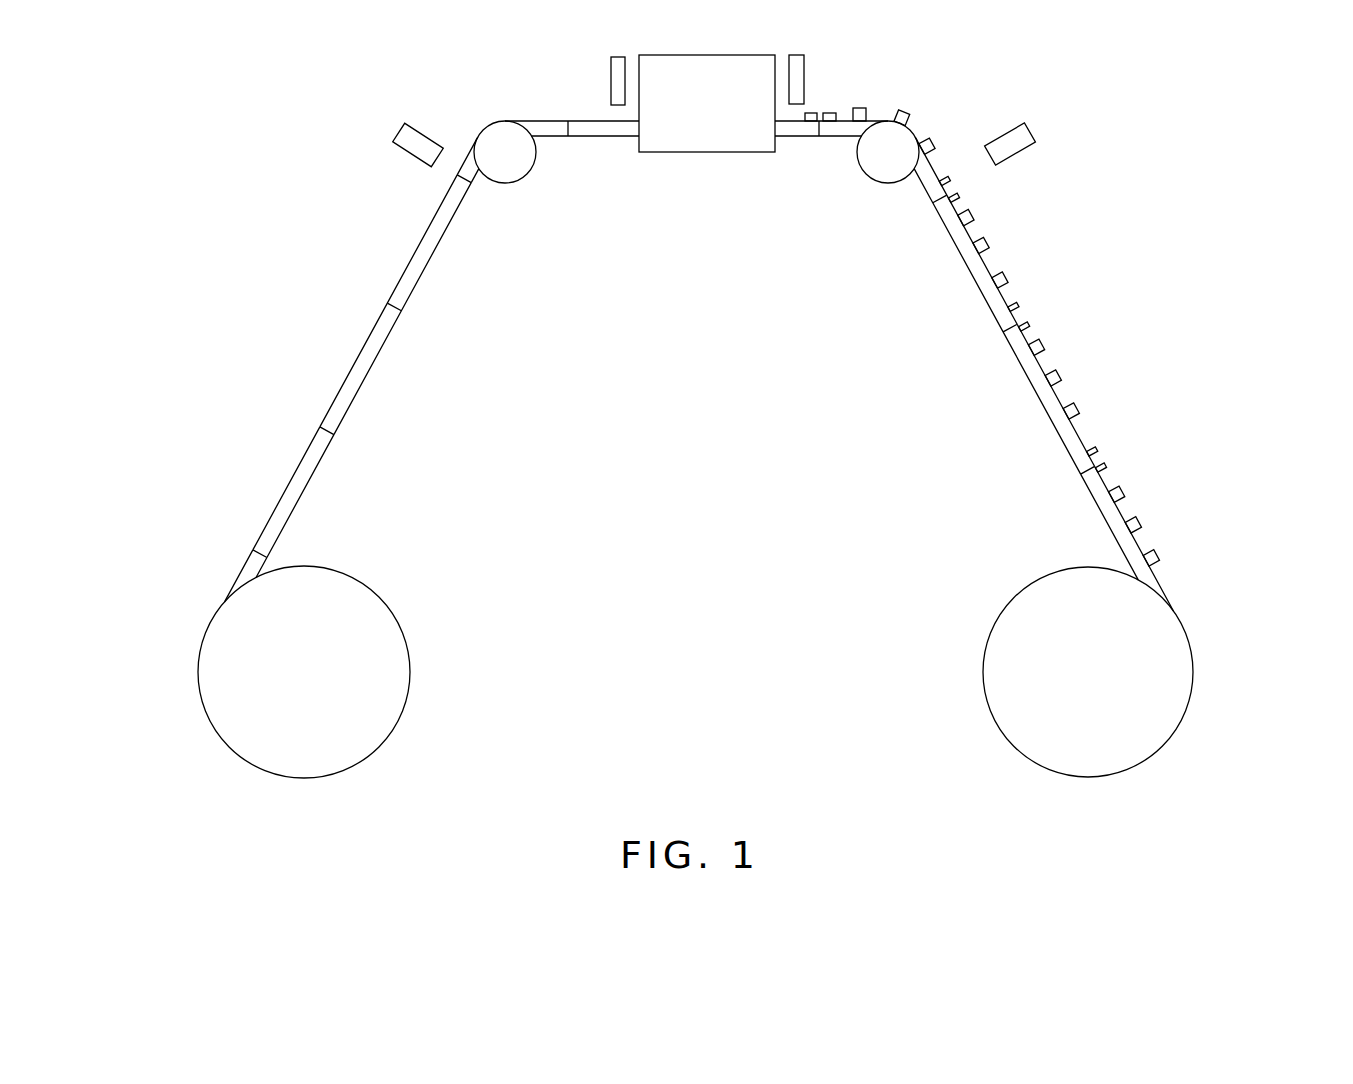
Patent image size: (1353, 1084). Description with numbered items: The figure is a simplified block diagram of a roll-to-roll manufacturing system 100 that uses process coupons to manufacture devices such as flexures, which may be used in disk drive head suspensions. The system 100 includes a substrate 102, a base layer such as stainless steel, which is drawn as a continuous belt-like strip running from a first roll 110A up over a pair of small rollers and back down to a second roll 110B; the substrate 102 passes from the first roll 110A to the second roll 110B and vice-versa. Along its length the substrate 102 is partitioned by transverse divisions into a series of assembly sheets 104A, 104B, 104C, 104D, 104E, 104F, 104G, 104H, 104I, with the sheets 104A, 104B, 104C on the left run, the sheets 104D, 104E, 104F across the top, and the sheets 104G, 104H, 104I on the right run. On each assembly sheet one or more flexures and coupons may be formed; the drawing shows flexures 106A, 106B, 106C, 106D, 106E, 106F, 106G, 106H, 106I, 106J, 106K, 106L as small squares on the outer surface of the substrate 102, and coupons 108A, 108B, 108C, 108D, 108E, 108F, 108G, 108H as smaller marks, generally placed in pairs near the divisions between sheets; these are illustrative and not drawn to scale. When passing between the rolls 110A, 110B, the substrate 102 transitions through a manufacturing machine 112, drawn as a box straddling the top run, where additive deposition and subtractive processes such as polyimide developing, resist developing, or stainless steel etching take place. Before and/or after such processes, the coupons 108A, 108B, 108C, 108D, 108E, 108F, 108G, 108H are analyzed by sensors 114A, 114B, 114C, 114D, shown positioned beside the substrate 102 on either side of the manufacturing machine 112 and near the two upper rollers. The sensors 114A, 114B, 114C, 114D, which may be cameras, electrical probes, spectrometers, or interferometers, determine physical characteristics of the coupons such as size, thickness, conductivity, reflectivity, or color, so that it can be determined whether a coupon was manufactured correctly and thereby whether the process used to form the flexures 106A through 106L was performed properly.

The system 100 is at (212, 110).
The substrate 102 is at (236, 444).
The assembly sheet 104A is at (300, 486).
The assembly sheet 104B is at (365, 358).
The assembly sheet 104C is at (435, 238).
The assembly sheet 104D is at (550, 128).
The assembly sheet 104E is at (607, 128).
The assembly sheet 104F is at (837, 130).
The assembly sheet 104G is at (970, 260).
The assembly sheet 104H is at (1043, 395).
The assembly sheet 104I is at (1113, 525).
The flexure 106A is at (860, 108).
The flexure 106B is at (910, 112).
The flexure 106C is at (932, 140).
The flexure 106D is at (972, 212).
The flexure 106E is at (990, 240).
The flexure 106F is at (1007, 276).
The flexure 106G is at (1044, 346).
The flexure 106H is at (1062, 378).
The flexure 106I is at (1080, 410).
The flexure 106J is at (1124, 493).
The flexure 106K is at (1142, 523).
The flexure 106L is at (1160, 558).
The coupon 108A is at (812, 113).
The coupon 108B is at (830, 113).
The coupon 108C is at (947, 178).
The coupon 108D is at (955, 194).
The coupon 108E is at (1020, 305).
The coupon 108F is at (1032, 325).
The coupon 108G is at (1098, 450).
The coupon 108H is at (1108, 465).
The first roll 110A is at (278, 695).
The second roll 110B is at (1069, 695).
The manufacturing machine 112 is at (688, 118).
The sensor 114A is at (416, 124).
The sensor 114B is at (619, 57).
The sensor 114C is at (794, 55).
The sensor 114D is at (1035, 130).